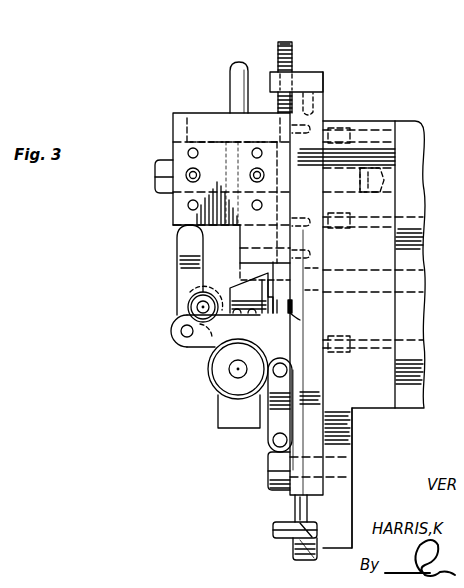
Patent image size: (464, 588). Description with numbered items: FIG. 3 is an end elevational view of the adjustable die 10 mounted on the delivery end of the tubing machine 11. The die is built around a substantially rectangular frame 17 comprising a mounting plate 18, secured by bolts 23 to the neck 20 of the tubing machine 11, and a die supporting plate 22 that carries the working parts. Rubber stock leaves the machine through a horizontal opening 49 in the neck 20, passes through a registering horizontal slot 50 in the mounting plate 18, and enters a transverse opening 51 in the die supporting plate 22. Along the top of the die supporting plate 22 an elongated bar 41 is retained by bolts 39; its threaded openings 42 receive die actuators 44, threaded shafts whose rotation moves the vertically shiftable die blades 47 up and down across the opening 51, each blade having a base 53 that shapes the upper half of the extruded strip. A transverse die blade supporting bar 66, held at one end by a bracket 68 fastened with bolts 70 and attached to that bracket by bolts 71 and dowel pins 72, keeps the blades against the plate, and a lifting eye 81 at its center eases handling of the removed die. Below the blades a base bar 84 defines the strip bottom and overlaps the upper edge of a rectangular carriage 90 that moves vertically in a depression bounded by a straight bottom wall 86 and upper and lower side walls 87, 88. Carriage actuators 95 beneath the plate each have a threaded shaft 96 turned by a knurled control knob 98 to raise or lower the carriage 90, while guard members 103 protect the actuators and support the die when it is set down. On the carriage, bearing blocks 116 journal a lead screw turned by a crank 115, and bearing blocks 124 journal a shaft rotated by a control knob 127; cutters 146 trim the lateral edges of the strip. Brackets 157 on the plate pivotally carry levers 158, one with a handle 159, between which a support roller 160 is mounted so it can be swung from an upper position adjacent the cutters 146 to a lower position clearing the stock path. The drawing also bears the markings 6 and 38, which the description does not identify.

The section line indicator 6 is at (309, 259).
The adjustable die 10 is at (192, 102).
The tubing machine 11 is at (410, 119).
The rectangular frame 17 is at (329, 116).
The mounting plate 18 is at (375, 125).
The neck 20 is at (428, 376).
The die supporting plate 22 is at (326, 100).
The bolts 23 is at (417, 131).
The hex nut 38 is at (157, 180).
The bolts 39 is at (309, 72).
The elongated bar 41 is at (324, 72).
The threaded openings 42 is at (276, 71).
The die actuators 44 is at (285, 42).
The die blades 47 is at (276, 112).
The horizontal opening 49 is at (425, 278).
The horizontal slot 50 is at (368, 292).
The transverse opening 51 is at (317, 288).
The base 53 is at (317, 272).
The die blade supporting bar 66 is at (212, 113).
The bracket 68 is at (173, 114).
The bolts 70 is at (182, 133).
The bolts 71 is at (190, 180).
The dowel pins 72 is at (188, 153).
The lifting eye 81 is at (241, 62).
The base bar 84 is at (283, 302).
The straight bottom wall 86 is at (300, 365).
The upper side wall 87 is at (300, 316).
The lower side wall 88 is at (345, 421).
The carriage 90 is at (303, 383).
The carriage actuators 95 is at (272, 528).
The threaded shaft 96 is at (295, 508).
The knurled control knob 98 is at (280, 538).
The guard members 103 is at (293, 560).
The crank 115 is at (273, 420).
The bearing blocks 116 is at (225, 353).
The bearing blocks 124 is at (225, 410).
The control knob 127 is at (220, 378).
The cutter 146 is at (235, 285).
The brackets 157 is at (173, 331).
The lever 158 is at (182, 300).
The handle 159 is at (182, 252).
The support roller 160 is at (201, 292).